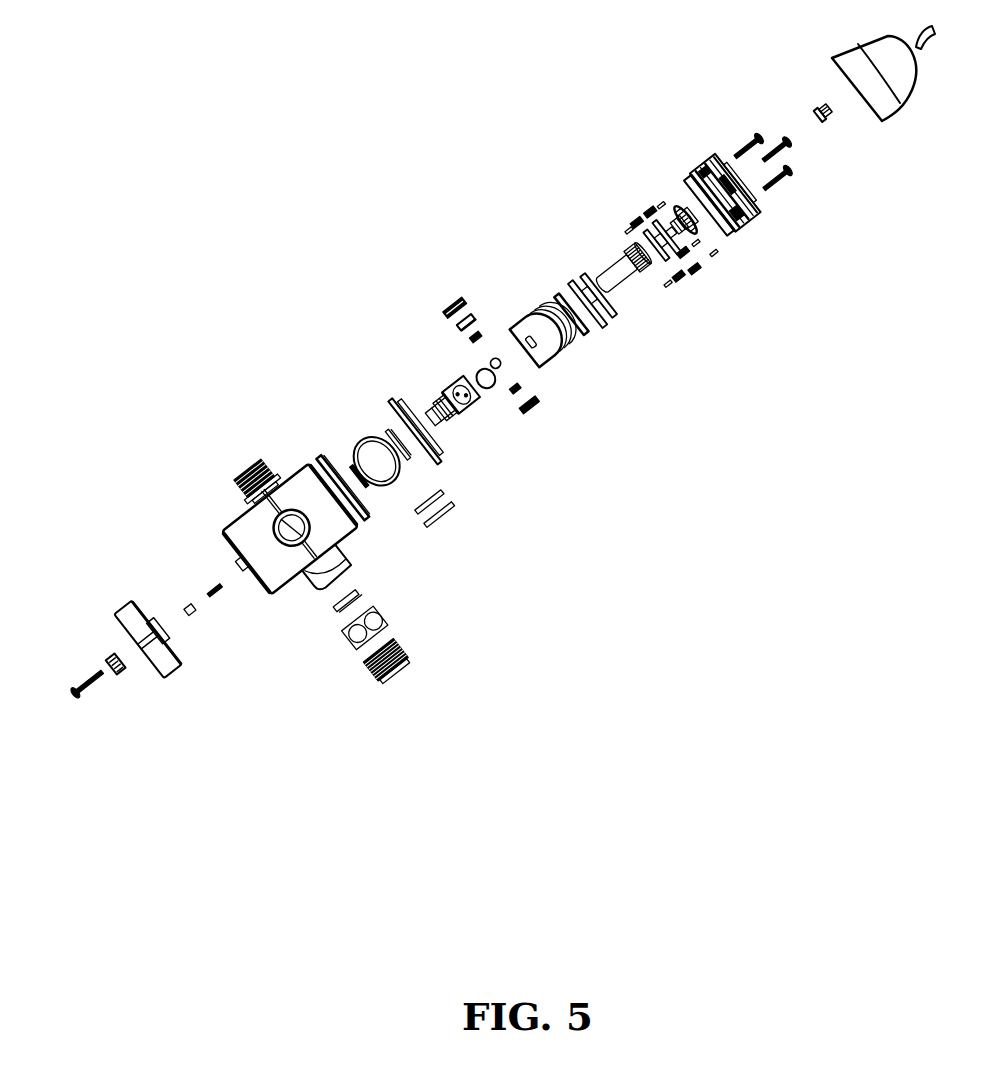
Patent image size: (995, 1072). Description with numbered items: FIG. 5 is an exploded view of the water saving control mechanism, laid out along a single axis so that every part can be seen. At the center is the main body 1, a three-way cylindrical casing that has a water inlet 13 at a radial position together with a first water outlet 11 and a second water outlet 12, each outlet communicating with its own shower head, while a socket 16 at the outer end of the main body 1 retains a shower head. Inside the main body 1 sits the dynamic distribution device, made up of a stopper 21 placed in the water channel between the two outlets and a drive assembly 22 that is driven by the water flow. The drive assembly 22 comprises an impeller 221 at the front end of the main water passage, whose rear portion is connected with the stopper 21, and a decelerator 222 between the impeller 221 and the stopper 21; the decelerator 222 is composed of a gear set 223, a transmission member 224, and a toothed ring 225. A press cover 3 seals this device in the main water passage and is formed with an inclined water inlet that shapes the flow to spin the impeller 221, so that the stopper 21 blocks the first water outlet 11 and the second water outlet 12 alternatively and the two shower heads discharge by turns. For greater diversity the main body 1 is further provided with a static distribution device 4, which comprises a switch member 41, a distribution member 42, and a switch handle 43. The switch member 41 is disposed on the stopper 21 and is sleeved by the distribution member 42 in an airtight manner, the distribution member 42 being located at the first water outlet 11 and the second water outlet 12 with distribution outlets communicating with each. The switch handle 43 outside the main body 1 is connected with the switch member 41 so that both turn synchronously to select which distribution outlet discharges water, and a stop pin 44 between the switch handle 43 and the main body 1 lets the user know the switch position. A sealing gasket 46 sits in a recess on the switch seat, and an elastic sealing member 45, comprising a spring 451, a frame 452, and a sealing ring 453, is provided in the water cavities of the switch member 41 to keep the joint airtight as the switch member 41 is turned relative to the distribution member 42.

The main body 1 is at (300, 478).
The first water outlet 11 is at (276, 526).
The second water outlet 12 is at (252, 472).
The water inlet 13 is at (332, 563).
The socket 16 is at (848, 50).
The stopper 21 is at (614, 282).
The drive assembly 22 is at (649, 207).
The impeller 221 is at (684, 212).
The decelerator 222 is at (700, 257).
The gear set 223 is at (697, 278).
The transmission member 224 is at (657, 232).
The toothed ring 225 is at (588, 322).
The press cover 3 is at (752, 218).
The static distribution device 4 is at (562, 451).
The switch member 41 is at (447, 398).
The distribution member 42 is at (548, 363).
The switch handle 43 is at (175, 660).
The stop pin 44 is at (212, 598).
The elastic sealing member 45 is at (457, 251).
The spring 451 is at (510, 275).
The frame 452 is at (470, 314).
The sealing ring 453 is at (440, 300).
The sealing gasket 46 is at (488, 388).